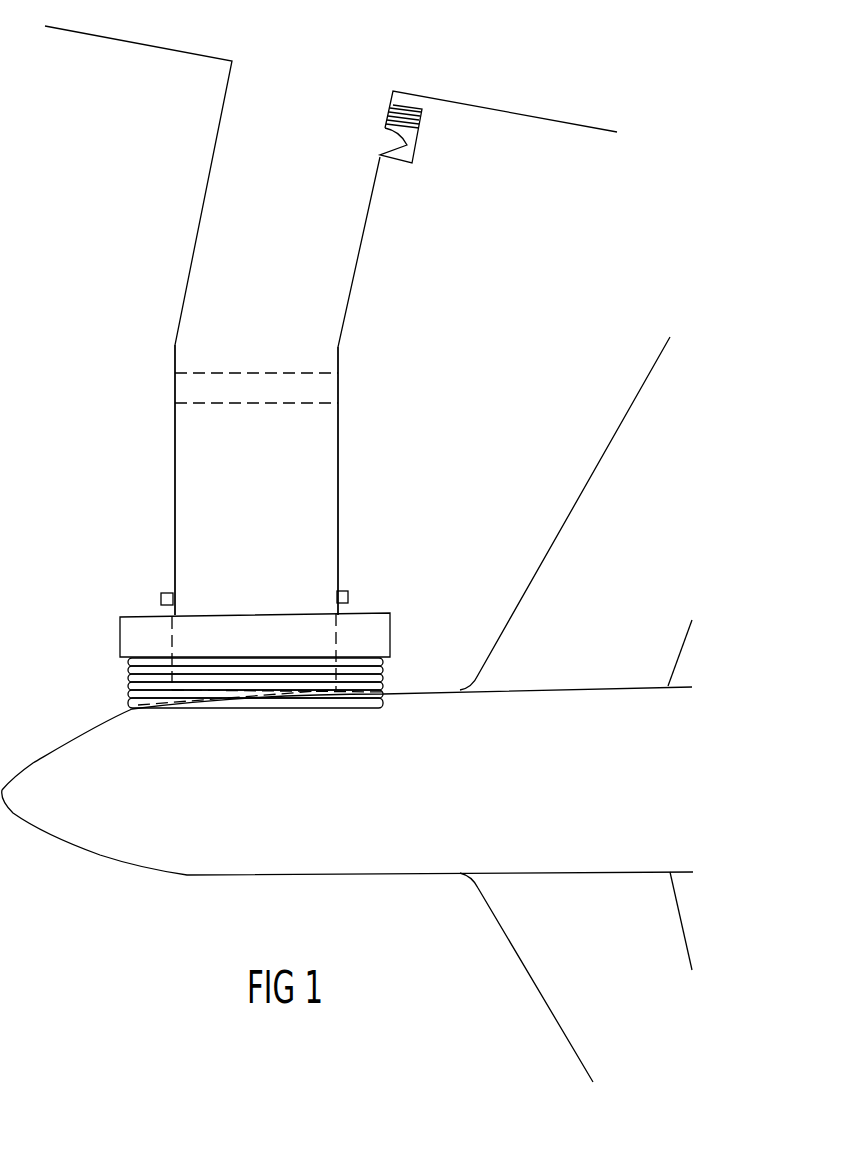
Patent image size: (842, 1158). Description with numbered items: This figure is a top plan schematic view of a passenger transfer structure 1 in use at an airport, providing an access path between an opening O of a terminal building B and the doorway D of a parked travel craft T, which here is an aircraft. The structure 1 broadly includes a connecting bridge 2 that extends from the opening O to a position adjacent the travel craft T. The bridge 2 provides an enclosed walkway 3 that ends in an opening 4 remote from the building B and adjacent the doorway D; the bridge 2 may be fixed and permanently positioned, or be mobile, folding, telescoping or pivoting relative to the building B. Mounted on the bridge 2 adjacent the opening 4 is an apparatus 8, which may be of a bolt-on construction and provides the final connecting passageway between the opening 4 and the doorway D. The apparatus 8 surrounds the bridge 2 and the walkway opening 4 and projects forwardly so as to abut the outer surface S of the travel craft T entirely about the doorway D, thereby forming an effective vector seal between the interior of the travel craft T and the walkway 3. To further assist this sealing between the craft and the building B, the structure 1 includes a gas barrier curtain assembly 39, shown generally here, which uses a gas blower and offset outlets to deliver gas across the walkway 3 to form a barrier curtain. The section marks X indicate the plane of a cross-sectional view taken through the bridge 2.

The passenger transfer structure 1 is at (92, 340).
The connecting bridge 2 is at (340, 485).
The enclosed walkway 3 is at (197, 513).
The opening 4 is at (322, 693).
The apparatus 8 is at (106, 638).
The gas barrier curtain assembly 39 is at (227, 380).
The terminal building B is at (556, 93).
The doorway D is at (270, 697).
The opening O is at (298, 74).
The outer surface S is at (117, 735).
The travel craft T is at (170, 840).
The section line X- X is at (164, 417).